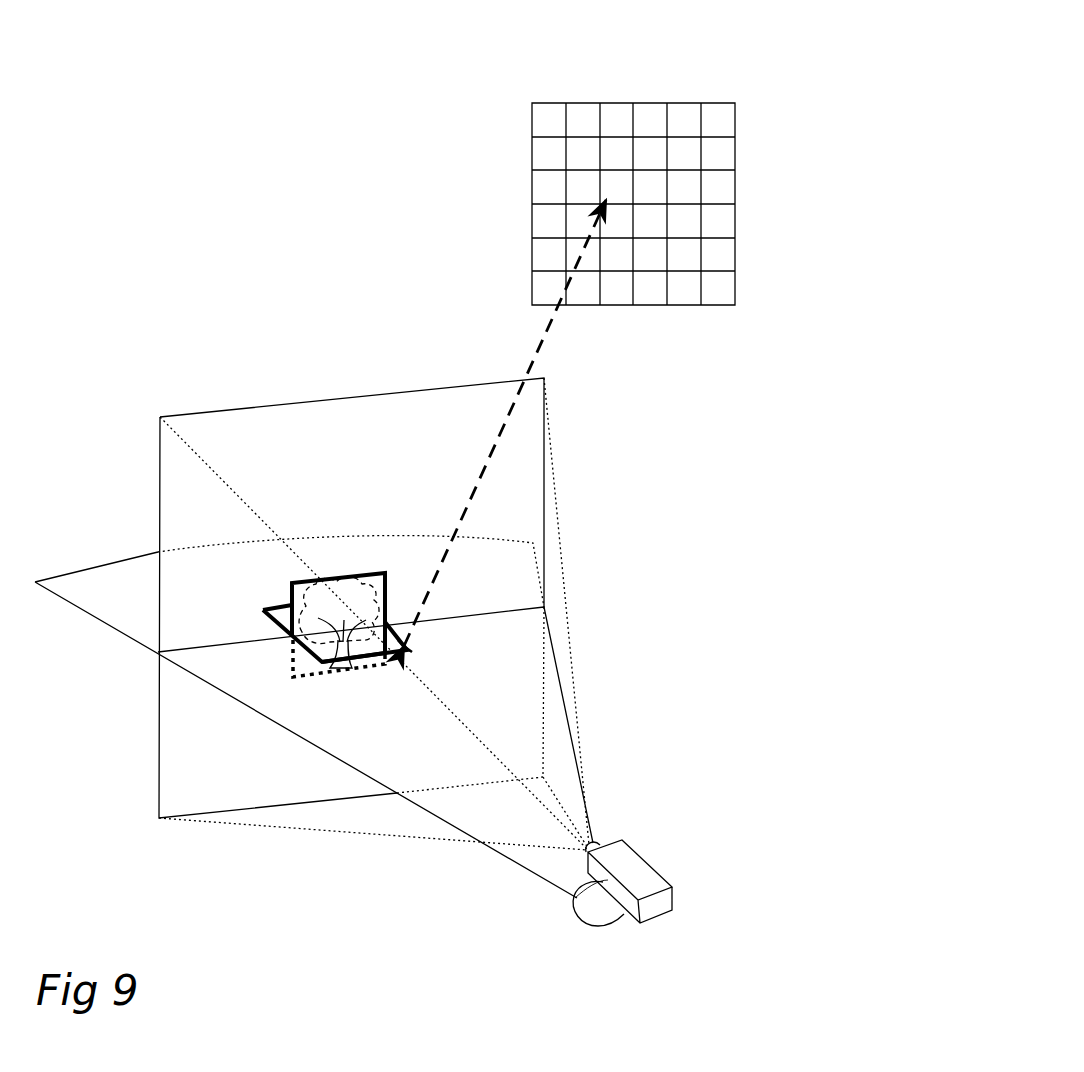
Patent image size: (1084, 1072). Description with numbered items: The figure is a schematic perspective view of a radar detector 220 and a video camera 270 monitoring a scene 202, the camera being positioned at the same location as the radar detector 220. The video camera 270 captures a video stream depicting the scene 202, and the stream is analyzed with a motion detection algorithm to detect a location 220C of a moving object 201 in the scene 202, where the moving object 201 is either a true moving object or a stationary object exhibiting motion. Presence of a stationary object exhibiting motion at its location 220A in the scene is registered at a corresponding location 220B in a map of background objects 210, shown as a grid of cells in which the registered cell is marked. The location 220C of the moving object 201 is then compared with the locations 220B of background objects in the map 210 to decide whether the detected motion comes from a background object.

The moving object 201 is at (160, 651).
The scene 202 is at (592, 524).
The map of background objects 210 is at (736, 150).
The radar detector 220 is at (598, 918).
The location of the stationary object exhibiting motion 220A is at (258, 610).
The location in the map of background objects 220B is at (622, 184).
The location of the moving object 220C is at (382, 570).
The video camera 270 is at (628, 870).